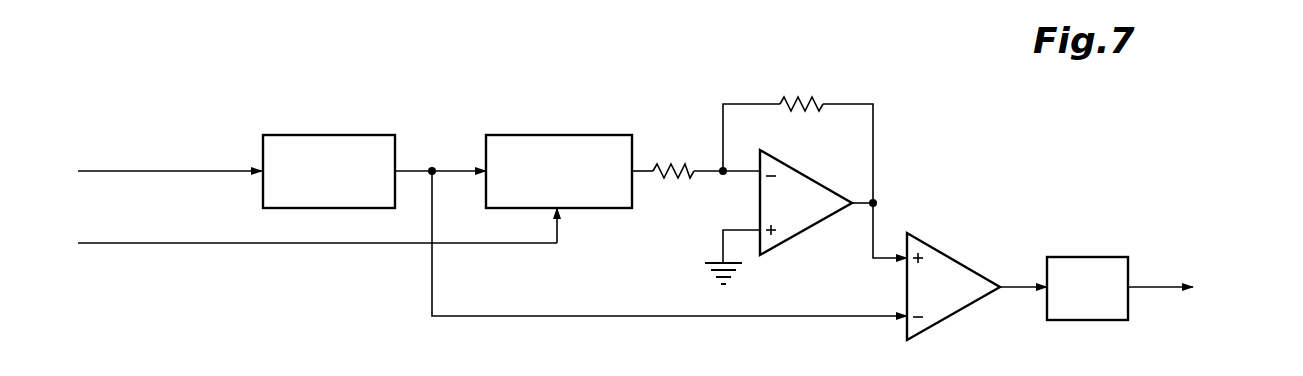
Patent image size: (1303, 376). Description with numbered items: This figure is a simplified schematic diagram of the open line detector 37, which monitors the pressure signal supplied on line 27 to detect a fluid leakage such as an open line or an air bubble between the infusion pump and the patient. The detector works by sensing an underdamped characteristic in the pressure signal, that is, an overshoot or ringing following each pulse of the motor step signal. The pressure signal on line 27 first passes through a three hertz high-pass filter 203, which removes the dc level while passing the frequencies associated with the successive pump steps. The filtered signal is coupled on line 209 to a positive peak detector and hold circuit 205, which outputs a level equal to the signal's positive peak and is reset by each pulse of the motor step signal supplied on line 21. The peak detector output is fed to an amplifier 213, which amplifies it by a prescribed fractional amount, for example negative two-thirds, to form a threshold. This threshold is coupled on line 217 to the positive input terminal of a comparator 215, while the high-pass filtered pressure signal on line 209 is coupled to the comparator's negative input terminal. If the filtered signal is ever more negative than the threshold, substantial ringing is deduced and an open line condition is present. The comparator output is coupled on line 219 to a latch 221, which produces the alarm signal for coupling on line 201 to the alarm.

The open line detector circuit 37 is at (1278, 89).
The line 27 is at (216, 170).
The 3 Hz high-pass filter 203 is at (346, 135).
The line 209 is at (411, 170).
The positive peak detector and hold circuit 205 is at (561, 135).
The line 21 is at (315, 243).
The amplifier 213 is at (811, 230).
The line 217 is at (873, 148).
The comparator 215 is at (960, 311).
The line 219 is at (1008, 286).
The latch 221 is at (1090, 320).
The line 201 is at (1150, 286).